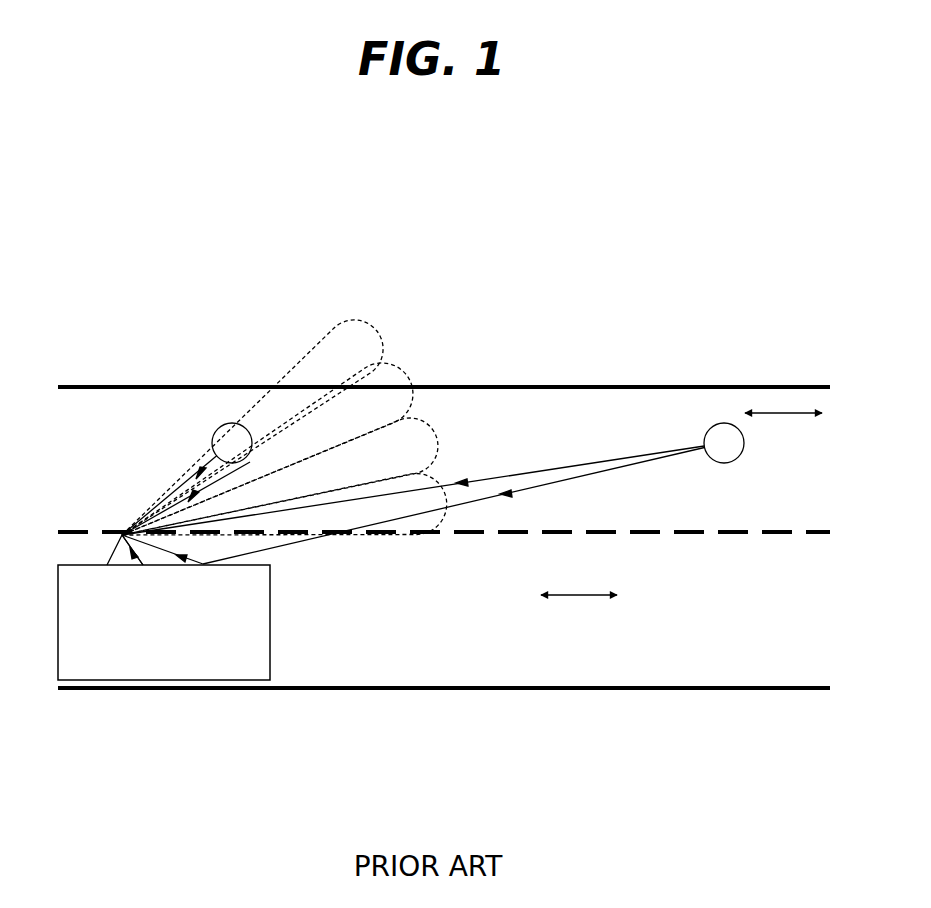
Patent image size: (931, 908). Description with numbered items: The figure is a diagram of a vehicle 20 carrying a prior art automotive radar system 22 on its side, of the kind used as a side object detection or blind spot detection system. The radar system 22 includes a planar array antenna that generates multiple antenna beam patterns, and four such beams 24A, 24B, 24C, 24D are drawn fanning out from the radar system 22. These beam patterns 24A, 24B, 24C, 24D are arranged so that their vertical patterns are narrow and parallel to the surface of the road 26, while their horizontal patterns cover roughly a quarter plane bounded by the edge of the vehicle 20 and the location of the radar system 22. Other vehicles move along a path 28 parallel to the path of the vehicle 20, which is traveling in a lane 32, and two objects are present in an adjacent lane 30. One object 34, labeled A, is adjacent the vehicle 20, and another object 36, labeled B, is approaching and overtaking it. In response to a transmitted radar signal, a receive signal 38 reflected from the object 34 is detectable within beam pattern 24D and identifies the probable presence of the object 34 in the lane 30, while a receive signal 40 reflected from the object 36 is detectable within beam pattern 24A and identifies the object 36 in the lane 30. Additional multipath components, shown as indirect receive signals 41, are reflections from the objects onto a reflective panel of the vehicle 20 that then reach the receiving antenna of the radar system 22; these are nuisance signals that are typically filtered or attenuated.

The vehicle 20 is at (97, 672).
The automotive radar system 22 is at (122, 535).
The antenna beam pattern 24A is at (422, 530).
The antenna beam pattern 24B is at (430, 424).
The antenna beam pattern 24C is at (405, 366).
The antenna beam pattern 24D is at (360, 322).
The road 26 is at (697, 686).
The path 28 is at (772, 413).
The lane 30 is at (817, 514).
The lane 32 is at (817, 670).
The object 34 is at (230, 423).
The object 36 is at (724, 423).
The receive signal 38 is at (180, 486).
The receive signal 40 is at (578, 462).
The indirect receive signals 41 is at (565, 478).